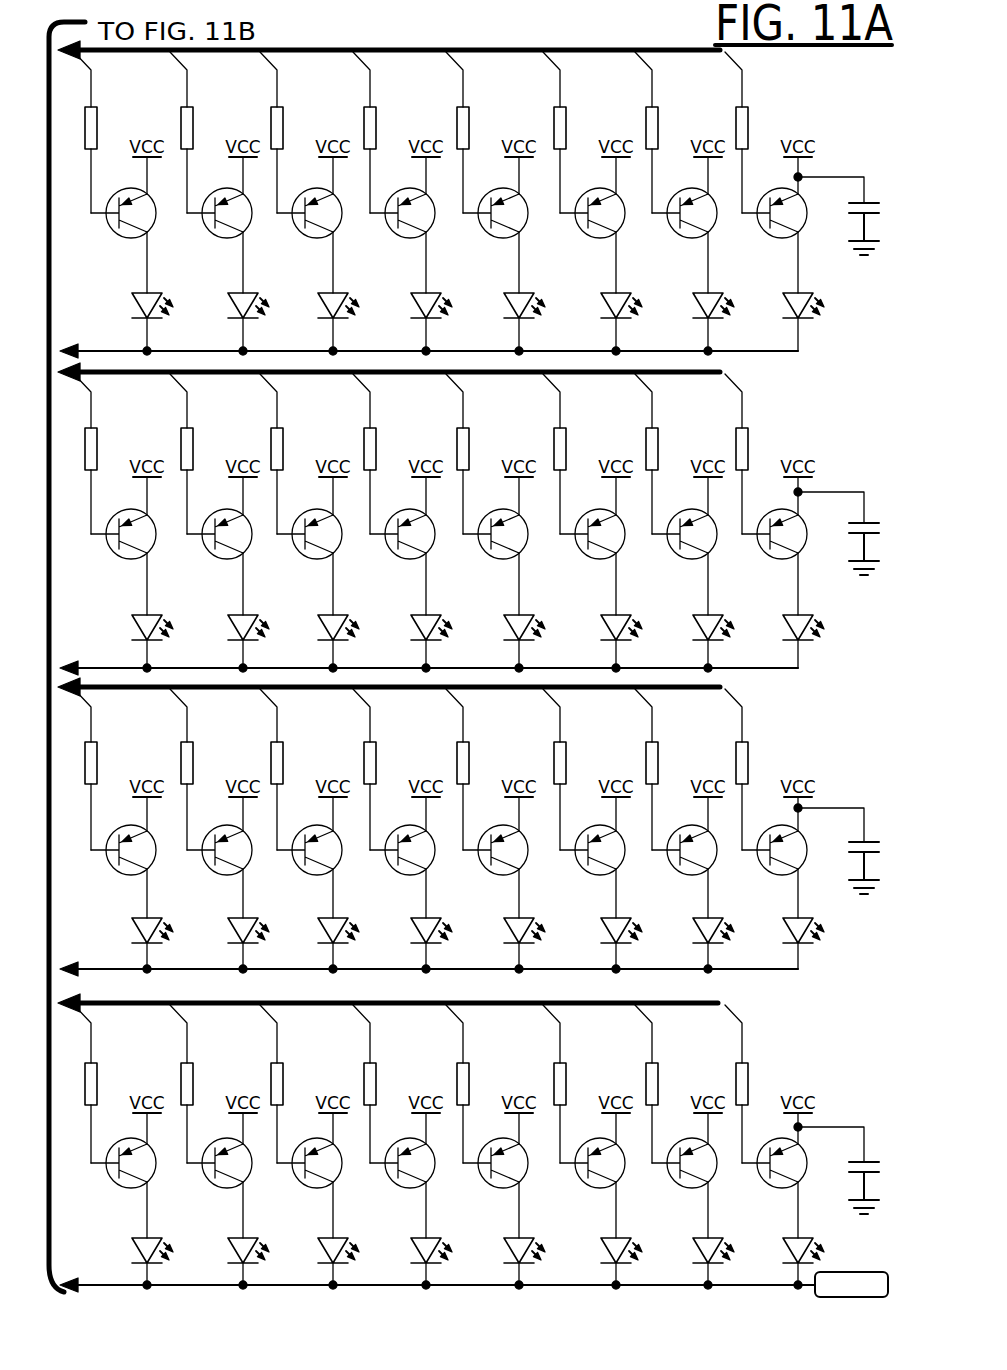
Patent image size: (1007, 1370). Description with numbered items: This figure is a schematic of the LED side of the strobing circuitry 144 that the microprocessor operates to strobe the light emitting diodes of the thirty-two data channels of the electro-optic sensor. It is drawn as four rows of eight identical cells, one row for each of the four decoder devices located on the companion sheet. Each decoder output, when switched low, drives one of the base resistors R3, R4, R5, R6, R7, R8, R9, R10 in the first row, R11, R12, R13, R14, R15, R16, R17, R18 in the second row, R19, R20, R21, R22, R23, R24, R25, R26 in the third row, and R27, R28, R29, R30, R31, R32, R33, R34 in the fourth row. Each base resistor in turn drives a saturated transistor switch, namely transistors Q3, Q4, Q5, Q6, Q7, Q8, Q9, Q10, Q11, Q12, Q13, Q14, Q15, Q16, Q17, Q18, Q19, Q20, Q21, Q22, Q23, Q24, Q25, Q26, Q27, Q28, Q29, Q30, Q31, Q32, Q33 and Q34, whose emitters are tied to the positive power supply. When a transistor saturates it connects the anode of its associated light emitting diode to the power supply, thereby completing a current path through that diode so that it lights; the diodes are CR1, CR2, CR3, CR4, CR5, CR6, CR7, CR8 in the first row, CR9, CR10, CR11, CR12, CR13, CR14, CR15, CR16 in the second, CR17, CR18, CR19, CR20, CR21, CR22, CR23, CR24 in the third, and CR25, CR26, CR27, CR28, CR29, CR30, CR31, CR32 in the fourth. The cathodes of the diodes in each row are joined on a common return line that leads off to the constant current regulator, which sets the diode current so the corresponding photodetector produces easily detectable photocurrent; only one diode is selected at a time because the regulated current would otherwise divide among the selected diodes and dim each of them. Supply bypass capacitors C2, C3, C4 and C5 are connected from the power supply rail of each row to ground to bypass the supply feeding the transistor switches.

The circuitry 144 is at (407, 37).
The base resistor R3 is at (99, 132).
The base resistor R4 is at (195, 132).
The base resistor R5 is at (285, 132).
The base resistor R6 is at (378, 132).
The base resistor R7 is at (471, 132).
The base resistor R8 is at (568, 132).
The base resistor R9 is at (660, 132).
The base resistor R10 is at (755, 132).
The base resistor R11 is at (104, 454).
The base resistor R12 is at (200, 454).
The base resistor R13 is at (290, 454).
The base resistor R14 is at (383, 454).
The base resistor R15 is at (476, 454).
The base resistor R16 is at (573, 454).
The base resistor R17 is at (665, 454).
The base resistor R18 is at (755, 454).
The base resistor R19 is at (104, 769).
The base resistor R20 is at (200, 769).
The base resistor R21 is at (290, 769).
The base resistor R22 is at (383, 769).
The base resistor R23 is at (476, 769).
The base resistor R24 is at (573, 769).
The base resistor R25 is at (665, 769).
The base resistor R26 is at (755, 769).
The base resistor R27 is at (104, 1084).
The base resistor R28 is at (200, 1084).
The base resistor R29 is at (290, 1084).
The base resistor R30 is at (383, 1084).
The base resistor R31 is at (476, 1084).
The base resistor R32 is at (573, 1084).
The base resistor R33 is at (665, 1084).
The base resistor R34 is at (755, 1084).
The saturated transistor switch Q3 is at (108, 215).
The saturated transistor switch Q4 is at (221, 215).
The saturated transistor switch Q5 is at (311, 215).
The saturated transistor switch Q6 is at (404, 215).
The saturated transistor switch Q7 is at (497, 215).
The saturated transistor switch Q8 is at (594, 215).
The saturated transistor switch Q9 is at (686, 215).
The saturated transistor switch Q10 is at (776, 215).
The saturated transistor switch Q11 is at (124, 536).
The saturated transistor switch Q12 is at (221, 536).
The saturated transistor switch Q13 is at (311, 536).
The saturated transistor switch Q14 is at (404, 536).
The saturated transistor switch Q15 is at (497, 536).
The saturated transistor switch Q16 is at (594, 536).
The saturated transistor switch Q17 is at (686, 536).
The saturated transistor switch Q18 is at (776, 536).
The saturated transistor switch Q19 is at (124, 847).
The saturated transistor switch Q20 is at (221, 847).
The saturated transistor switch Q21 is at (311, 847).
The saturated transistor switch Q22 is at (404, 847).
The saturated transistor switch Q23 is at (497, 847).
The saturated transistor switch Q24 is at (594, 847).
The saturated transistor switch Q25 is at (686, 847).
The saturated transistor switch Q26 is at (776, 847).
The saturated transistor switch Q27 is at (124, 1165).
The saturated transistor switch Q28 is at (221, 1165).
The saturated transistor switch Q29 is at (311, 1165).
The saturated transistor switch Q30 is at (404, 1165).
The saturated transistor switch Q31 is at (497, 1165).
The saturated transistor switch Q32 is at (594, 1165).
The saturated transistor switch Q33 is at (686, 1165).
The saturated transistor switch Q34 is at (776, 1165).
The LED CR1 is at (159, 314).
The LED CR2 is at (255, 314).
The LED CR3 is at (345, 314).
The LED CR4 is at (438, 314).
The LED CR5 is at (531, 314).
The LED CR6 is at (628, 314).
The LED CR7 is at (720, 314).
The LED CR8 is at (810, 314).
The LED CR9 is at (159, 633).
The LED CR10 is at (260, 633).
The LED CR11 is at (350, 633).
The LED CR12 is at (443, 633).
The LED CR13 is at (536, 633).
The LED CR14 is at (633, 633).
The LED CR15 is at (727, 641).
The LED CR16 is at (813, 641).
The LED CR17 is at (164, 935).
The LED CR18 is at (260, 935).
The LED CR19 is at (350, 935).
The LED CR20 is at (443, 935).
The LED CR21 is at (536, 935).
The LED CR22 is at (633, 935).
The LED CR23 is at (725, 935).
The LED CR24 is at (815, 935).
The LED CR25 is at (164, 1253).
The LED CR26 is at (260, 1253).
The LED CR27 is at (350, 1253).
The LED CR28 is at (443, 1253).
The LED CR29 is at (536, 1253).
The LED CR30 is at (633, 1253).
The LED CR31 is at (725, 1253).
The LED CR32 is at (819, 1253).
The supply bypass capacitor C2 is at (843, 214).
The supply bypass capacitor C3 is at (836, 531).
The supply bypass capacitor C4 is at (836, 849).
The supply bypass capacitor C5 is at (836, 1168).